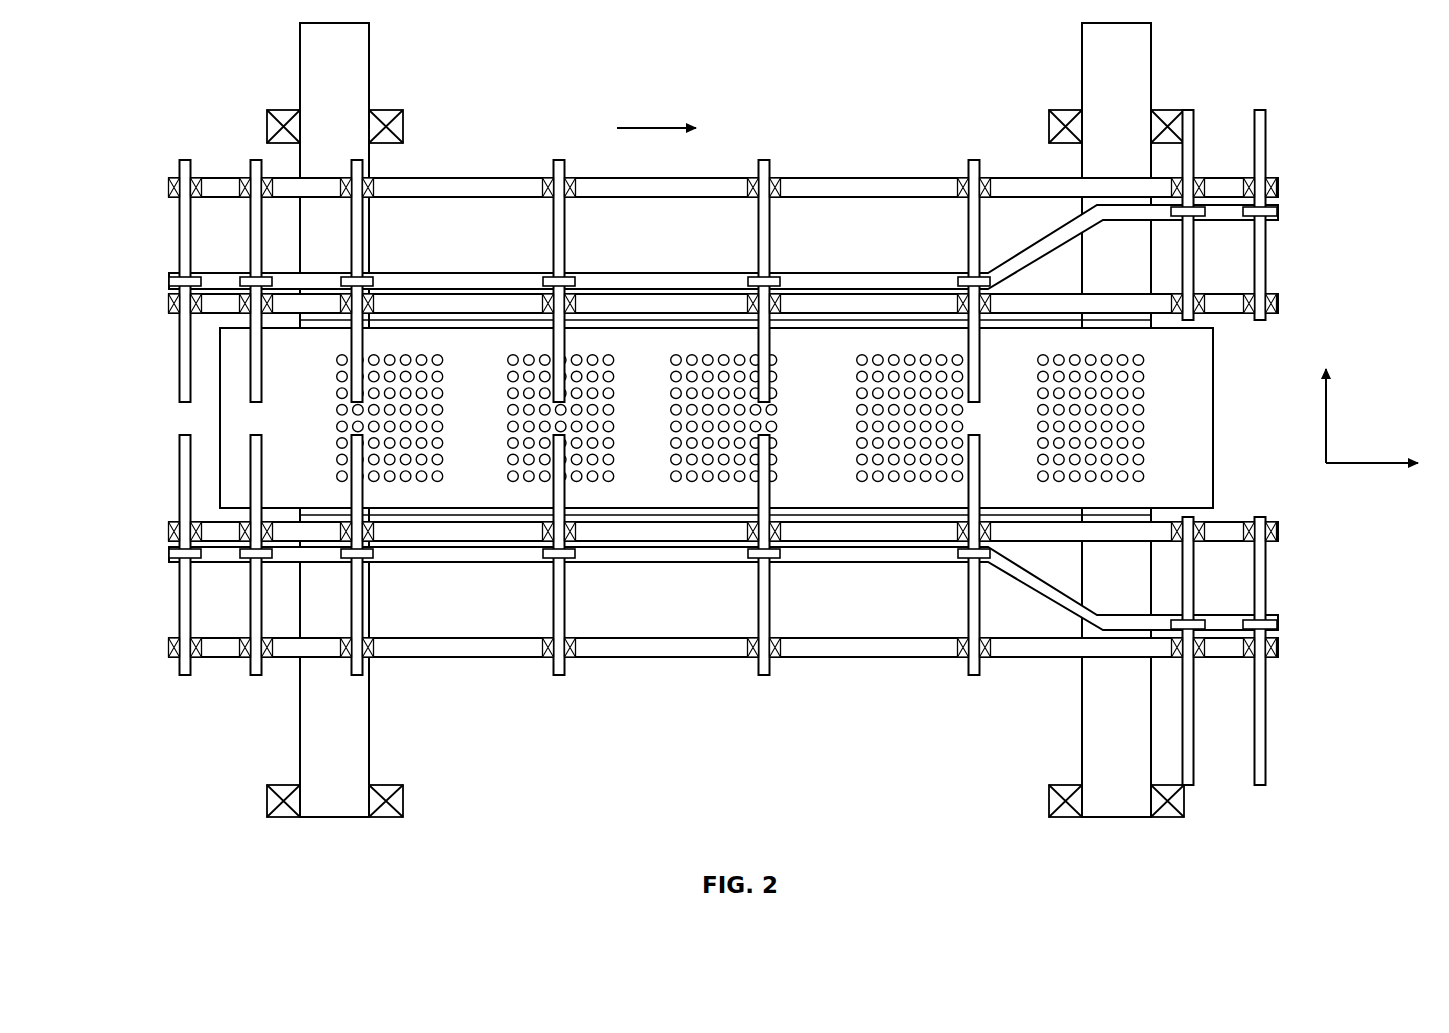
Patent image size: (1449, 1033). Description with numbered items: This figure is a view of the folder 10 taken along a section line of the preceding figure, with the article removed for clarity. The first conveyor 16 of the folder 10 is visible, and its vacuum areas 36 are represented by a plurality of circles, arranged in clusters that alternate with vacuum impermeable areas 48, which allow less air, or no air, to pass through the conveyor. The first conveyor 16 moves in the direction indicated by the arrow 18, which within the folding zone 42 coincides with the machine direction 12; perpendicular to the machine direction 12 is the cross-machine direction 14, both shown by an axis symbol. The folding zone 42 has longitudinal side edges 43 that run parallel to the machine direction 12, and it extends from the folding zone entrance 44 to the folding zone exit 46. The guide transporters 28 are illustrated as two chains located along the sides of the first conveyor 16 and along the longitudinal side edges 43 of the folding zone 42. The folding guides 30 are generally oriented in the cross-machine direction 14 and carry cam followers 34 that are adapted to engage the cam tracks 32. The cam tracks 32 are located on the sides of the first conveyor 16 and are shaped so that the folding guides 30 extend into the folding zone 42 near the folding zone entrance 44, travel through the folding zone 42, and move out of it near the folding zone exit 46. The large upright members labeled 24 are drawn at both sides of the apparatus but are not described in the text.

The folder 10 is at (884, 95).
The machine direction 12 is at (1382, 459).
The cross-machine direction 14 is at (1328, 404).
The first conveyor 16 is at (651, 407).
The arrow 18 is at (664, 126).
The support column 24 is at (367, 53).
The guide transporters 28 is at (812, 178).
The folding guides 30 is at (1300, 580).
The cam tracks 32 is at (1048, 238).
The cam followers 34 is at (579, 267).
The vacuum areas 36 is at (515, 486).
The folding zone 42 is at (665, 500).
The longitudinal side edges 43 is at (437, 327).
The folding zone entrance 44 is at (181, 419).
The folding zone exit 46 is at (1248, 439).
The vacuum impermeable areas 48 is at (306, 407).